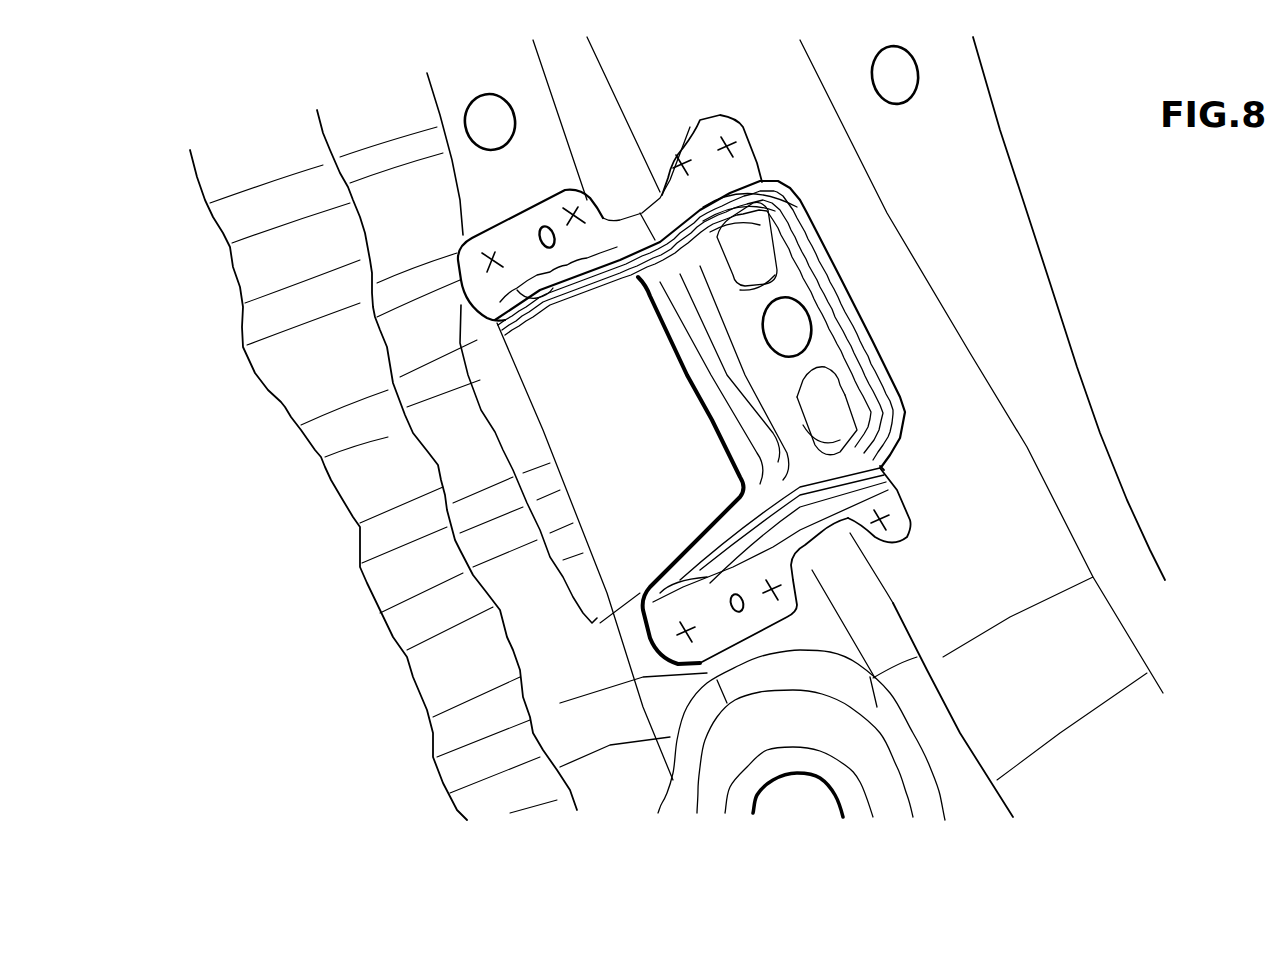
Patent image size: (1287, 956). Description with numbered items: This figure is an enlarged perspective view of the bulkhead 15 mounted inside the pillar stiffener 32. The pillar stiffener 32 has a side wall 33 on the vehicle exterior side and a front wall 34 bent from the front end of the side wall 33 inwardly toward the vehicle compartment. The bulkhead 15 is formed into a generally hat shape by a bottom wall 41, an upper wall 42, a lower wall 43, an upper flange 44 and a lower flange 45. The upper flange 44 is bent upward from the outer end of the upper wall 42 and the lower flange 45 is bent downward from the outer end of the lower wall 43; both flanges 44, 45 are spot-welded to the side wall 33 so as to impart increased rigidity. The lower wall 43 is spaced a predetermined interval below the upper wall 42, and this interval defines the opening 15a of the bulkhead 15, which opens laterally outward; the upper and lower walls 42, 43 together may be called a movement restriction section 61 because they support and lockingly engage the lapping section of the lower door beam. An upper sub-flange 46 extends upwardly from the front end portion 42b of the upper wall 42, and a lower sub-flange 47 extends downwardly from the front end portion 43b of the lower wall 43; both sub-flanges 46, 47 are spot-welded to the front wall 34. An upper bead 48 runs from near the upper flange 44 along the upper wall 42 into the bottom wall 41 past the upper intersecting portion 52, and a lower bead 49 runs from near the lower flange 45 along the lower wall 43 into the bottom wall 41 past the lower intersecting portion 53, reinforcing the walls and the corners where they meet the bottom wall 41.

The bulkhead 15 is at (836, 262).
The opening 15a is at (512, 348).
The pillar stiffener 32 is at (1052, 283).
The side wall 33 is at (632, 437).
The front wall 34 is at (927, 382).
The bottom wall 41 is at (827, 337).
The upper wall 42 is at (623, 227).
The front end portion of the upper wall 42b is at (662, 195).
The lower wall 43 is at (777, 610).
The front end portion of the lower wall 43b is at (897, 487).
The upper flange 44 is at (513, 233).
The lower flange 45 is at (727, 627).
The upper sub-flange 46 is at (695, 150).
The lower sub-flange 47 is at (900, 533).
The upper bead 48 is at (697, 223).
The lower bead 49 is at (903, 430).
The upper intersecting portion 52 is at (757, 210).
The lower intersecting portion 53 is at (820, 505).
The movement restriction section 61 is at (558, 225).